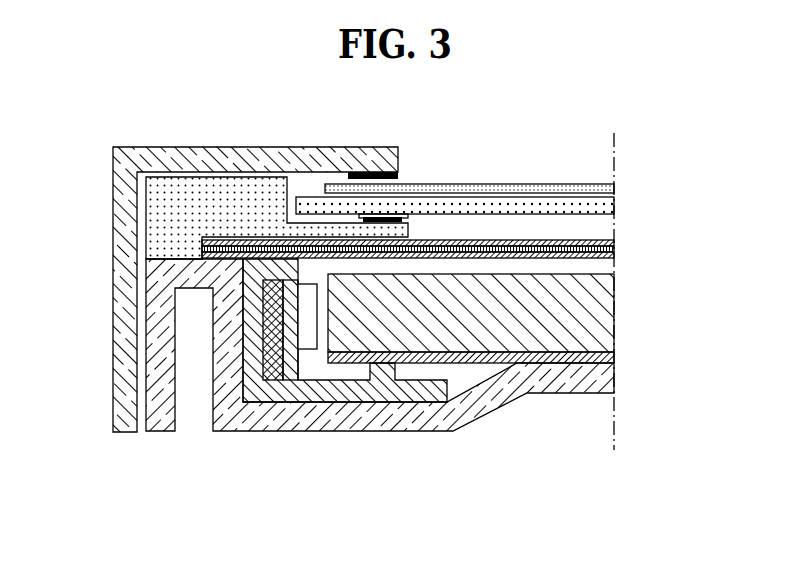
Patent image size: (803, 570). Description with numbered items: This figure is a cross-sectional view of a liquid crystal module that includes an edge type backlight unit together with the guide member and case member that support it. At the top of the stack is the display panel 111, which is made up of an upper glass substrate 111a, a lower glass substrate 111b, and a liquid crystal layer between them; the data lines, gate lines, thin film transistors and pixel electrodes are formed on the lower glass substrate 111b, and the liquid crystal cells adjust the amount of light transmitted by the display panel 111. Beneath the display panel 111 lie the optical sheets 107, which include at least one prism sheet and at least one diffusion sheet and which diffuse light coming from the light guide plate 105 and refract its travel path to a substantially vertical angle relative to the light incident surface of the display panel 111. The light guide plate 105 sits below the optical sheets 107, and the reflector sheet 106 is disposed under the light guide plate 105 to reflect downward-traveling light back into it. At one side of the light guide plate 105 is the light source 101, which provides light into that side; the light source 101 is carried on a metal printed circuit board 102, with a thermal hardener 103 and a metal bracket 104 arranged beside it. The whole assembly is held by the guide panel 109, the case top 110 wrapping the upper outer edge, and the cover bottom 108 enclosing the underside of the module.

The light source 101 is at (308, 338).
The metal printed circuit board 102 is at (292, 373).
The thermal hardener 103 is at (275, 377).
The metal bracket 104 is at (251, 377).
The light guide plate 105 is at (607, 305).
The reflector sheet 106 is at (605, 354).
The optical sheets 107 is at (626, 240).
The cover bottom 108 is at (162, 417).
The guide panel 109 is at (163, 231).
The case top 110 is at (120, 183).
The display panel 111 is at (530, 195).
The upper glass substrate 111a is at (612, 187).
The lower glass substrate 111b is at (612, 204).